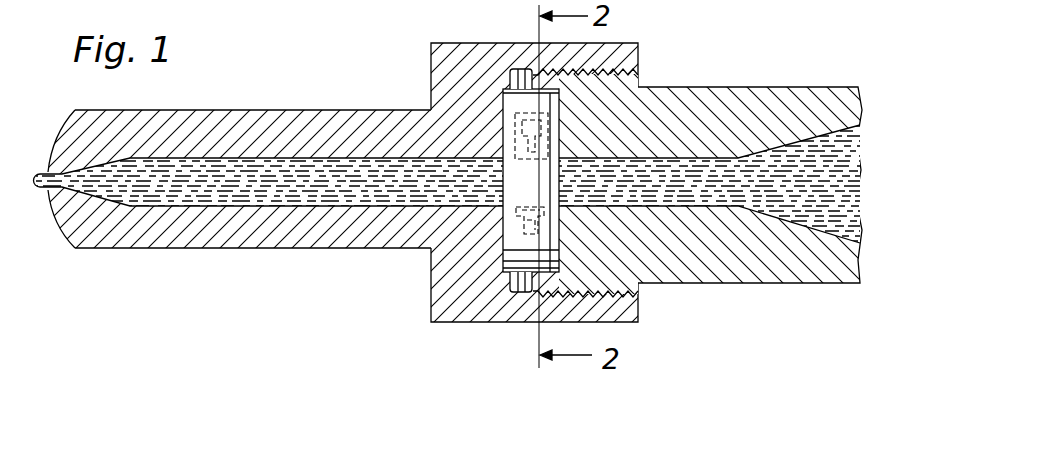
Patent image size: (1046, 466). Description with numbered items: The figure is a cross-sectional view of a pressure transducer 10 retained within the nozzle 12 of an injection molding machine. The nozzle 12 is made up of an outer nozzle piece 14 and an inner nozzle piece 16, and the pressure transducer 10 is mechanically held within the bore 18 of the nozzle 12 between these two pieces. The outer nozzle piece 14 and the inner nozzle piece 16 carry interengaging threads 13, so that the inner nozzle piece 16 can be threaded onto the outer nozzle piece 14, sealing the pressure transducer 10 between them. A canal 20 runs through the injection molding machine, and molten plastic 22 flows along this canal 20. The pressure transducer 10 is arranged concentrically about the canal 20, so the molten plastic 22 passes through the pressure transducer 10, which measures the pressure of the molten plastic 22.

The pressure transducer 10 is at (561, 129).
The nozzle 12 is at (492, 323).
The interengaging threads 13 is at (615, 66).
The outer nozzle piece 14 is at (384, 240).
The inner nozzle piece 16 is at (746, 87).
The bore 18 is at (503, 93).
The canal 20 is at (287, 162).
The molten plastic 22 is at (282, 207).